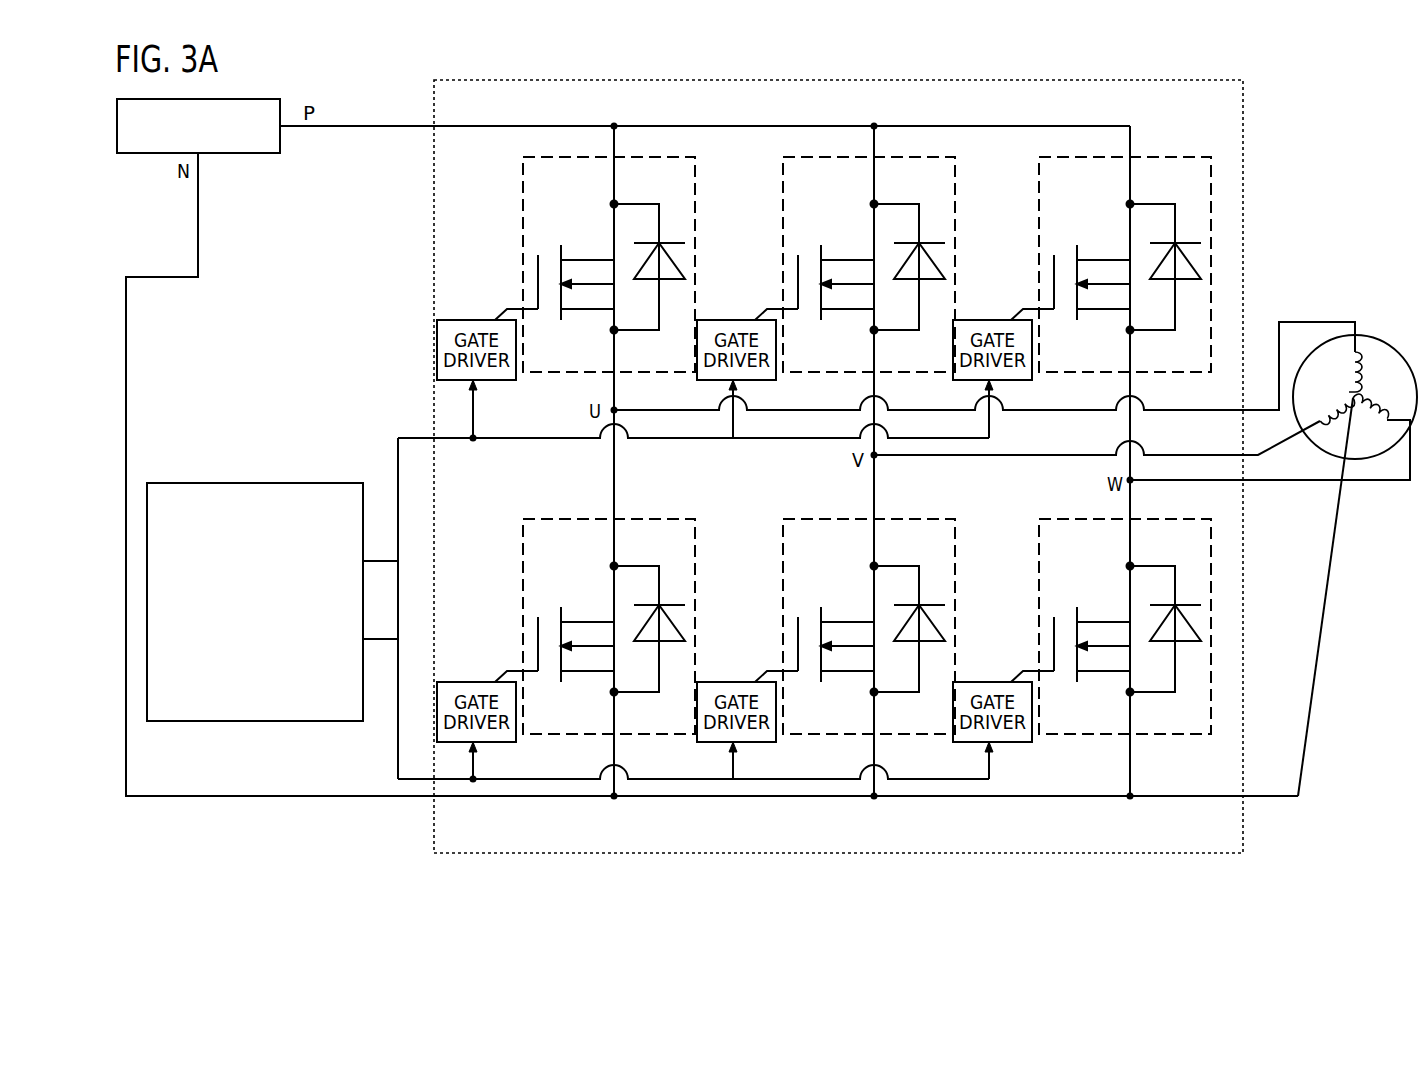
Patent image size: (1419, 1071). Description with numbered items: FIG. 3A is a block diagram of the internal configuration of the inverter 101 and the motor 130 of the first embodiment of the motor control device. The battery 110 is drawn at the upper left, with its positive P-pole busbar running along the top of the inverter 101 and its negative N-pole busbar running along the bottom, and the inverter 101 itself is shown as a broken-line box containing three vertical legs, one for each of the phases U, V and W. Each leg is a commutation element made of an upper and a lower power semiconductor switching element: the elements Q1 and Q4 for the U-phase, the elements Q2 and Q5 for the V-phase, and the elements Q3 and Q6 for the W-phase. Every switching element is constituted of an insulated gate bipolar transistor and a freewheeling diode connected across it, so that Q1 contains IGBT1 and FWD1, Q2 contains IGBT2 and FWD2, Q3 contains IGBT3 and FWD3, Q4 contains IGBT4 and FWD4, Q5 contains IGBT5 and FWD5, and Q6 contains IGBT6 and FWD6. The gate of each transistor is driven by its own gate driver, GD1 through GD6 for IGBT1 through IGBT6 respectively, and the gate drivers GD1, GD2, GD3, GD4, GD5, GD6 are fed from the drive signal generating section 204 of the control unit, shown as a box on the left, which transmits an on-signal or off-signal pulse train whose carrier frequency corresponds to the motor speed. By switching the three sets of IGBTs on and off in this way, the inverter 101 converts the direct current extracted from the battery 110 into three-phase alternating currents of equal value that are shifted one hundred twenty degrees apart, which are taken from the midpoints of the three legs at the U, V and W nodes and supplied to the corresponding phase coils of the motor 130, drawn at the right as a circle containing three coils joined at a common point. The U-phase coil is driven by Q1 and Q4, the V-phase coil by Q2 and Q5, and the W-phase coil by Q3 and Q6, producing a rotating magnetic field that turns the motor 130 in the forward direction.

The battery 110 is at (246, 98).
The inverter 101 is at (447, 75).
The drive signal generating section 204 is at (181, 482).
The motor 130 is at (1391, 336).
The power semiconductor switching element Q1 is at (595, 229).
The power semiconductor switching element Q2 is at (855, 229).
The power semiconductor switching element Q3 is at (1111, 229).
The power semiconductor switching element Q4 is at (595, 676).
The power semiconductor switching element Q5 is at (855, 676).
The power semiconductor switching element Q6 is at (1111, 676).
The insulated gate bipolar transistor IGBT1 is at (554, 259).
The insulated gate bipolar transistor IGBT2 is at (814, 259).
The insulated gate bipolar transistor IGBT3 is at (1070, 259).
The insulated gate bipolar transistor IGBT4 is at (554, 621).
The insulated gate bipolar transistor IGBT5 is at (814, 621).
The insulated gate bipolar transistor IGBT6 is at (1070, 621).
The freewheeling diode FWD1 is at (650, 254).
The freewheeling diode FWD2 is at (910, 254).
The freewheeling diode FWD3 is at (1166, 254).
The freewheeling diode FWD4 is at (650, 616).
The freewheeling diode FWD5 is at (910, 616).
The freewheeling diode FWD6 is at (1166, 616).
The gate driver GD1 is at (476, 353).
The gate driver GD2 is at (736, 353).
The gate driver GD3 is at (992, 353).
The gate driver GD4 is at (476, 705).
The gate driver GD5 is at (736, 705).
The gate driver GD6 is at (992, 705).